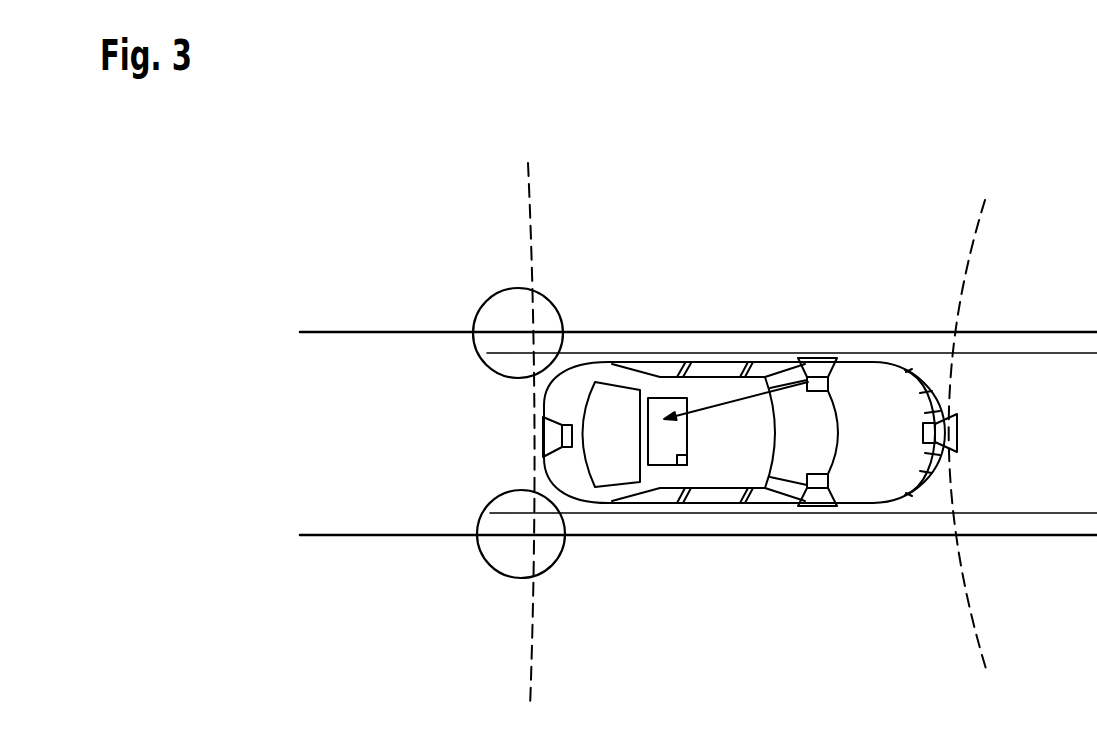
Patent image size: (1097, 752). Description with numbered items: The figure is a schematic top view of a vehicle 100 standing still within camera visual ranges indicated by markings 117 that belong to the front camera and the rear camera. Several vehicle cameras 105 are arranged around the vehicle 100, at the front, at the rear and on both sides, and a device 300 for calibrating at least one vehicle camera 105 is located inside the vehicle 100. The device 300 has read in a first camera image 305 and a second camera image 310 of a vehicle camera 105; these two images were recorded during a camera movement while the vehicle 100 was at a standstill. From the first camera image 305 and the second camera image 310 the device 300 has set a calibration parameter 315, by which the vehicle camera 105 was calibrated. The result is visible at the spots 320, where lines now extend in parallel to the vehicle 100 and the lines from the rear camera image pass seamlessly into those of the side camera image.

The vehicle 100 is at (887, 433).
The vehicle camera 105 is at (551, 432).
The markings 117 is at (530, 664).
The device 300 is at (658, 448).
The first camera image 305 is at (736, 331).
The second camera image 310 is at (713, 407).
The calibration parameter 315 is at (682, 462).
The spots 320 is at (497, 387).